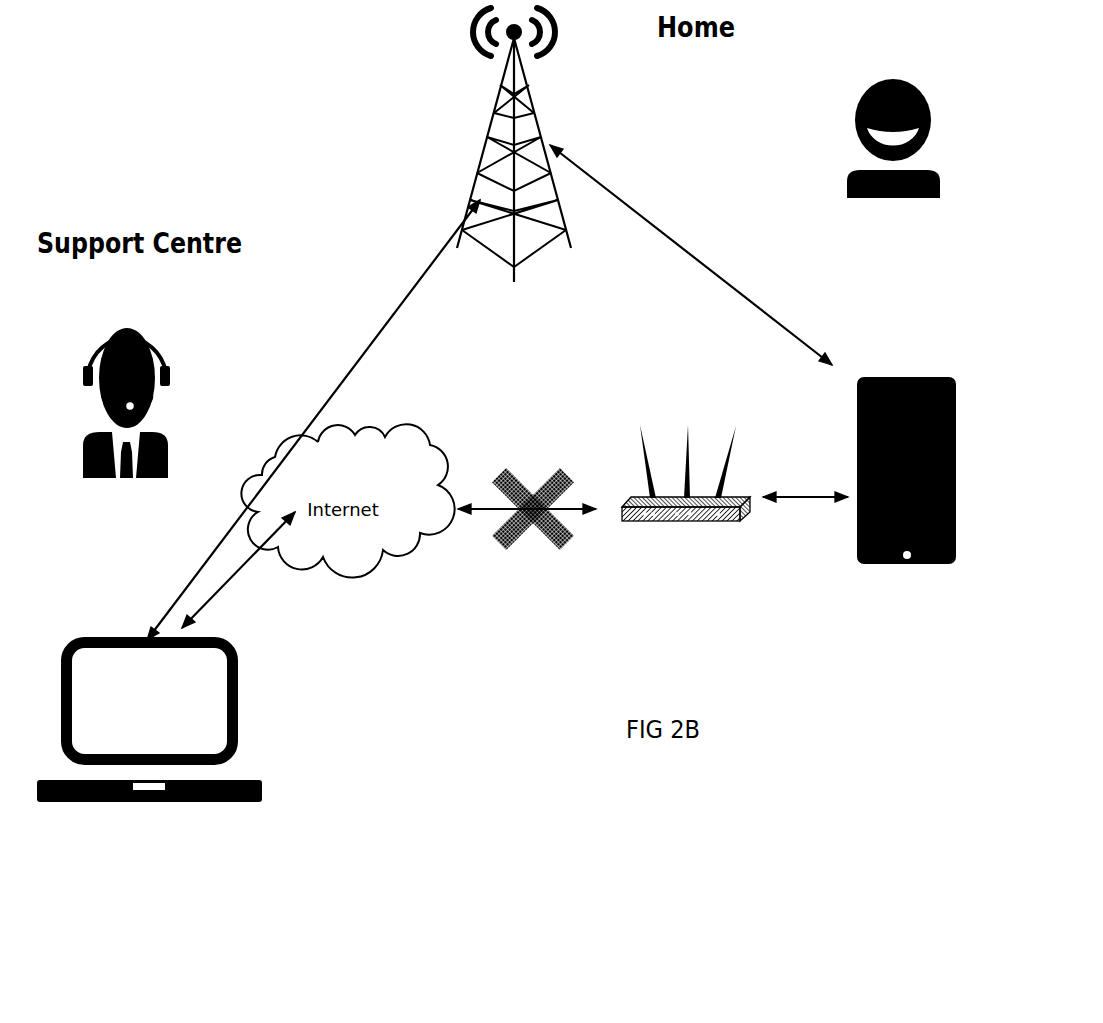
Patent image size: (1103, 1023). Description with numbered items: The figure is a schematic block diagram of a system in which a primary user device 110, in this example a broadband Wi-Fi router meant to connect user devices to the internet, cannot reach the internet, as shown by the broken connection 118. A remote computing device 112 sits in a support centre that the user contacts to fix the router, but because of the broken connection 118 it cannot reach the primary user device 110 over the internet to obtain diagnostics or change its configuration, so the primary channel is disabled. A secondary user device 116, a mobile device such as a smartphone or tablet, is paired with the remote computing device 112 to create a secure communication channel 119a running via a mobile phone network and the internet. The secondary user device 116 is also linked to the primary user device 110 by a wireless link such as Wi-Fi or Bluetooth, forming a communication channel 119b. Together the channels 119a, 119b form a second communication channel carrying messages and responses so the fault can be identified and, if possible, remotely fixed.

The primary user device 110 is at (672, 525).
The remote computing device 112 is at (218, 802).
The secondary user device 116 is at (888, 565).
The broken connection 118 is at (533, 525).
The secure communication channel 119a is at (760, 307).
The communication channel 119b is at (793, 497).